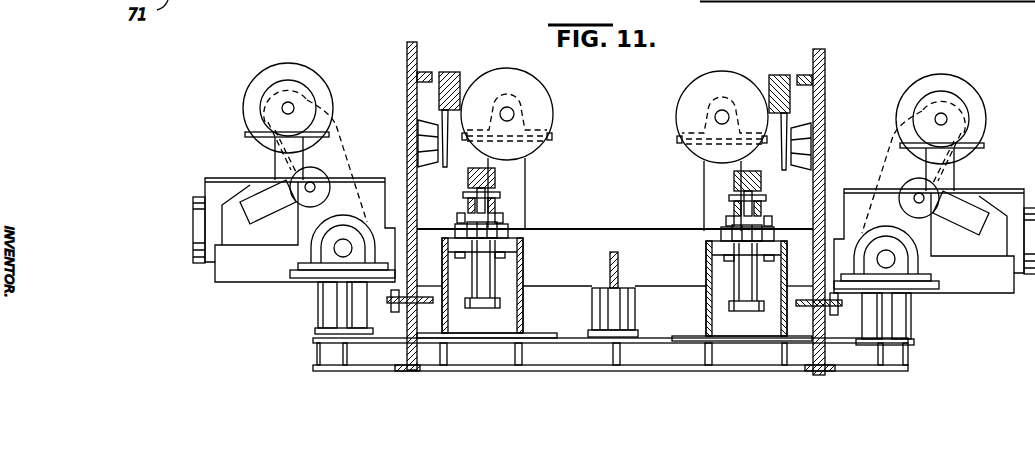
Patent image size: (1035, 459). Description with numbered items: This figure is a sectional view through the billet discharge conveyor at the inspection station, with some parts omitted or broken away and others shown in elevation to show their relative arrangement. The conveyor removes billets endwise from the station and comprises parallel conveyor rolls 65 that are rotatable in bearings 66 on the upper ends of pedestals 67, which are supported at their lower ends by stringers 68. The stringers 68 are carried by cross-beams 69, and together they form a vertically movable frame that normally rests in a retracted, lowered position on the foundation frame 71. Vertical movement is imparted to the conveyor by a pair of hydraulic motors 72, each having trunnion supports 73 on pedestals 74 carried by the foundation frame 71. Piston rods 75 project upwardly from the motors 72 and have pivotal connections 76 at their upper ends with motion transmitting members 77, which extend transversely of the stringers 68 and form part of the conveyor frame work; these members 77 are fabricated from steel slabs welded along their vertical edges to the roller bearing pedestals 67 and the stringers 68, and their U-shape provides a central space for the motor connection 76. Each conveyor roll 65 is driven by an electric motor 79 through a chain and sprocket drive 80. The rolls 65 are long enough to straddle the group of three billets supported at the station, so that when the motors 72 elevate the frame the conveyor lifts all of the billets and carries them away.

The conveyor roll 65 is at (317, 74).
The bearing 66 is at (317, 102).
The pedestal 67 is at (273, 163).
The stringer 68 is at (596, 228).
The cross-beam 69 is at (317, 323).
The foundation frame 71 is at (573, 320).
The hydraulic motor 72 is at (466, 305).
The trunnion support 73 is at (510, 228).
The pedestal 74 is at (525, 250).
The piston rod 75 is at (470, 211).
The pivotal connection 76 is at (500, 198).
The motion transmitting member 77 is at (470, 166).
The electric motor 79 is at (202, 182).
The chain and sprocket drive 80 is at (341, 166).